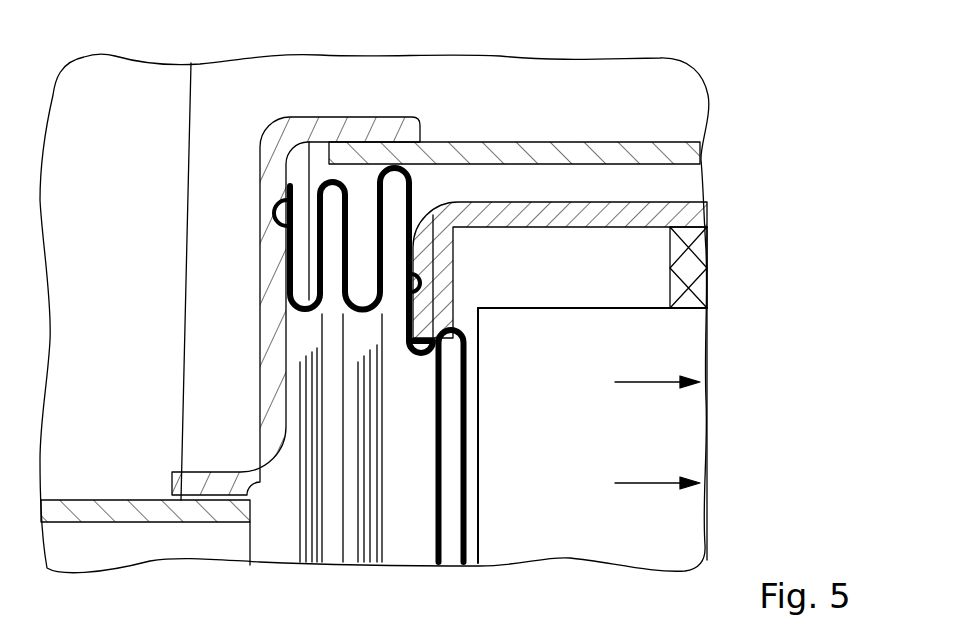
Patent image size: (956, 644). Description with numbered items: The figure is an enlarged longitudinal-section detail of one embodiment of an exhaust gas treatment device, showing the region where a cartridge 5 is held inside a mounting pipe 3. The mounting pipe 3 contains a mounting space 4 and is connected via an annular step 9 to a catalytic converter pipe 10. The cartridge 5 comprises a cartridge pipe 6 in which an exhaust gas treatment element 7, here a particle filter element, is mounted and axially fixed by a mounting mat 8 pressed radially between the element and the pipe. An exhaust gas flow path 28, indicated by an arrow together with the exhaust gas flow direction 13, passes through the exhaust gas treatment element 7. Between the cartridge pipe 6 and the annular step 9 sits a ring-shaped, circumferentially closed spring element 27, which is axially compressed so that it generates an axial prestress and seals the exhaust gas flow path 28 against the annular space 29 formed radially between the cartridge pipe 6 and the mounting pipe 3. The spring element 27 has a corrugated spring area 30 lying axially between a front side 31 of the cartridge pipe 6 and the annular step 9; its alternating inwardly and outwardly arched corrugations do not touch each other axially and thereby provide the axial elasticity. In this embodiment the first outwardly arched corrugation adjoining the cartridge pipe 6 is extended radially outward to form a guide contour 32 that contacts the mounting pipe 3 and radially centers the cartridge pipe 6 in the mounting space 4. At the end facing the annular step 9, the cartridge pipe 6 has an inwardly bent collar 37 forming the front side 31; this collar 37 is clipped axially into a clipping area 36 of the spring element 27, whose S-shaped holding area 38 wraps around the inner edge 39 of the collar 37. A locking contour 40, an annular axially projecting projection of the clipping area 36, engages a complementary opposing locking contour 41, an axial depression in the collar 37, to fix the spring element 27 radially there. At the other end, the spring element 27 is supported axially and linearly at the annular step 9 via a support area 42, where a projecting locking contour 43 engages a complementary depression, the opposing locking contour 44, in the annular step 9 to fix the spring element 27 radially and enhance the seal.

The mounting pipe 3 is at (583, 126).
The mounting space 4 is at (590, 166).
The cartridge 5 is at (663, 184).
The cartridge pipe 6 is at (630, 217).
The exhaust gas treatment element 7 is at (588, 453).
The mounting mat 8 is at (693, 260).
The annular step 9 is at (242, 155).
The catalytic converter pipe 10 is at (100, 482).
The exhaust gas flow direction 13 is at (650, 487).
The spring element 27 is at (318, 166).
The exhaust gas flow path 28 is at (650, 386).
The annular space 29 is at (683, 183).
The spring area 30 is at (397, 322).
The front side 31 is at (427, 312).
The guide contour 32 is at (388, 150).
The clipping area 36 is at (482, 378).
The collar 37 is at (592, 395).
The holding area 38 is at (422, 364).
The inner edge 39 is at (430, 347).
The locking contour 40 is at (416, 274).
The opposing locking contour 41 is at (425, 295).
The support area 42 is at (283, 268).
The locking contour 43 is at (280, 205).
The opposing locking contour 44 is at (278, 221).